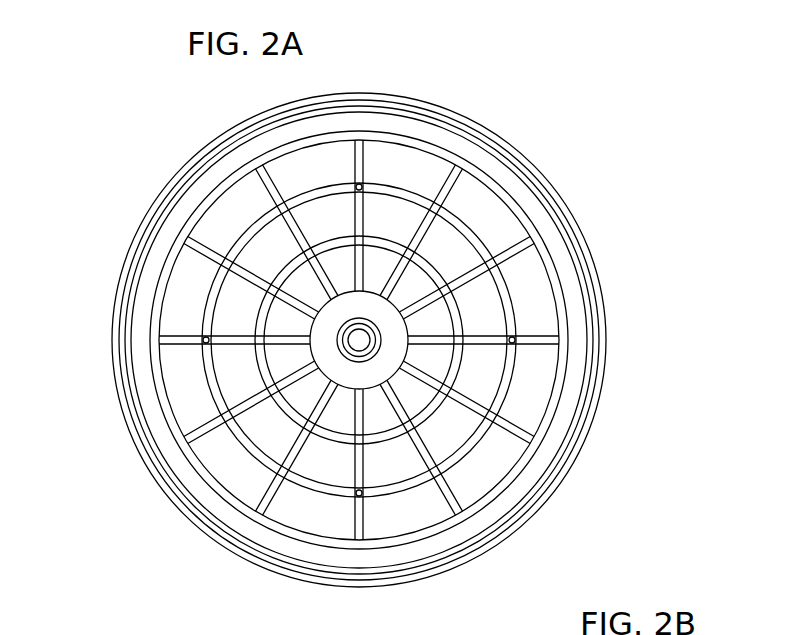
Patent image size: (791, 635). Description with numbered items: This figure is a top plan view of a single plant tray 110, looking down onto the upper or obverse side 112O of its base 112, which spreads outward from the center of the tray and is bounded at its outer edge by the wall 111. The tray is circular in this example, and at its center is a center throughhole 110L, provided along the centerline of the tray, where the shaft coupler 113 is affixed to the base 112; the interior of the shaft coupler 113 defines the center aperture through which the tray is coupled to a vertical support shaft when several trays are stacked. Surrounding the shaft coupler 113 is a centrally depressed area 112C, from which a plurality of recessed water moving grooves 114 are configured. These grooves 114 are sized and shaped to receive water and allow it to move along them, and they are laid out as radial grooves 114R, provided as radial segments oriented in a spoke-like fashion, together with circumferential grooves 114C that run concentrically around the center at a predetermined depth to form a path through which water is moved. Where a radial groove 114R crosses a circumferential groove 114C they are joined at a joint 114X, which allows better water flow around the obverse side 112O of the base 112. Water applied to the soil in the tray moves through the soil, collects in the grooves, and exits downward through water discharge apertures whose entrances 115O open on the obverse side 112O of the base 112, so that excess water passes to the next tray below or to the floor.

The plant tray 110 is at (130, 152).
The center throughhole 110L is at (190, 453).
The wall 111 is at (522, 157).
The base 112 is at (505, 222).
The obverse side 112O is at (417, 129).
The centrally depressed area 112C is at (233, 507).
The shaft coupler 113 is at (382, 328).
The recessed water moving grooves 114 is at (465, 348).
The circumferential recessed water moving grooves 114C is at (580, 493).
The radial grooves 114R is at (553, 532).
The joint 114X is at (437, 476).
The entrance 115O is at (360, 187).